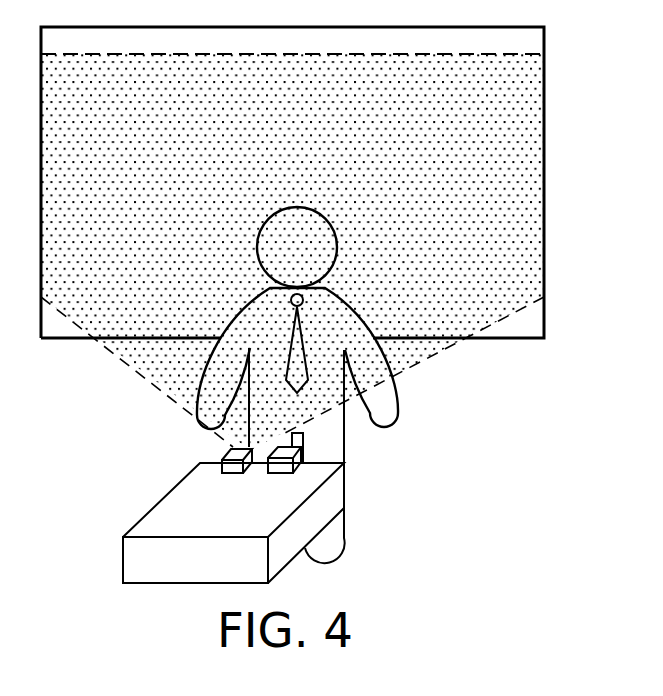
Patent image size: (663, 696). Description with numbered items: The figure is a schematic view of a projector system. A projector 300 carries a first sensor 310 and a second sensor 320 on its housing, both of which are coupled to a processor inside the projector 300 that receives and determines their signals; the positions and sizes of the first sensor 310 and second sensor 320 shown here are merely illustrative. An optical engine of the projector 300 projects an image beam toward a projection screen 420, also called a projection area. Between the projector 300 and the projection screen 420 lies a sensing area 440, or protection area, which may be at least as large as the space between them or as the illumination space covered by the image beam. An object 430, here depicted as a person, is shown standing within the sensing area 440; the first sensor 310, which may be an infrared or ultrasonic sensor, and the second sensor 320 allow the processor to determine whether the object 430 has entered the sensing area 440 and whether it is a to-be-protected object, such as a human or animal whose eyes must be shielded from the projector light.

The projector 300 is at (123, 557).
The first sensor 310 is at (228, 451).
The second sensor 320 is at (297, 468).
The projection screen 420 is at (527, 322).
The object 430 is at (386, 405).
The sensing area 440 is at (528, 128).